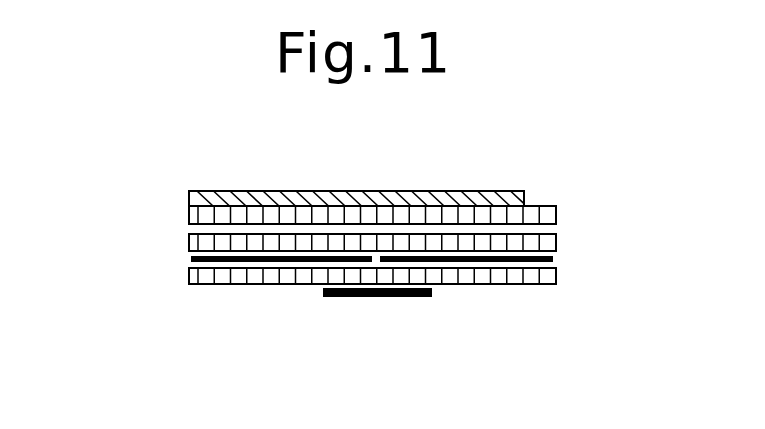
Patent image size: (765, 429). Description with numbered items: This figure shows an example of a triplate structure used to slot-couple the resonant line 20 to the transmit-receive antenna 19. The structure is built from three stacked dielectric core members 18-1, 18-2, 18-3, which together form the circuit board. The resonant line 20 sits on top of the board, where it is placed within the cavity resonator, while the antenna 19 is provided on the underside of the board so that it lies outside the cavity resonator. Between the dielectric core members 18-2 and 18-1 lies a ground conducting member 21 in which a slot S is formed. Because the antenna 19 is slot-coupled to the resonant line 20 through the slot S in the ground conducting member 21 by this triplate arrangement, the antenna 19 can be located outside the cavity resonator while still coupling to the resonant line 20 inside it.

The resonant line 20 is at (436, 191).
The dielectric core member 18-3 is at (189, 214).
The dielectric core member 18-2 is at (189, 244).
The dielectric core member 18-1 is at (189, 278).
The ground conducting member 21 is at (553, 259).
The slot S is at (375, 260).
The transmit-receive antenna 19 is at (383, 297).